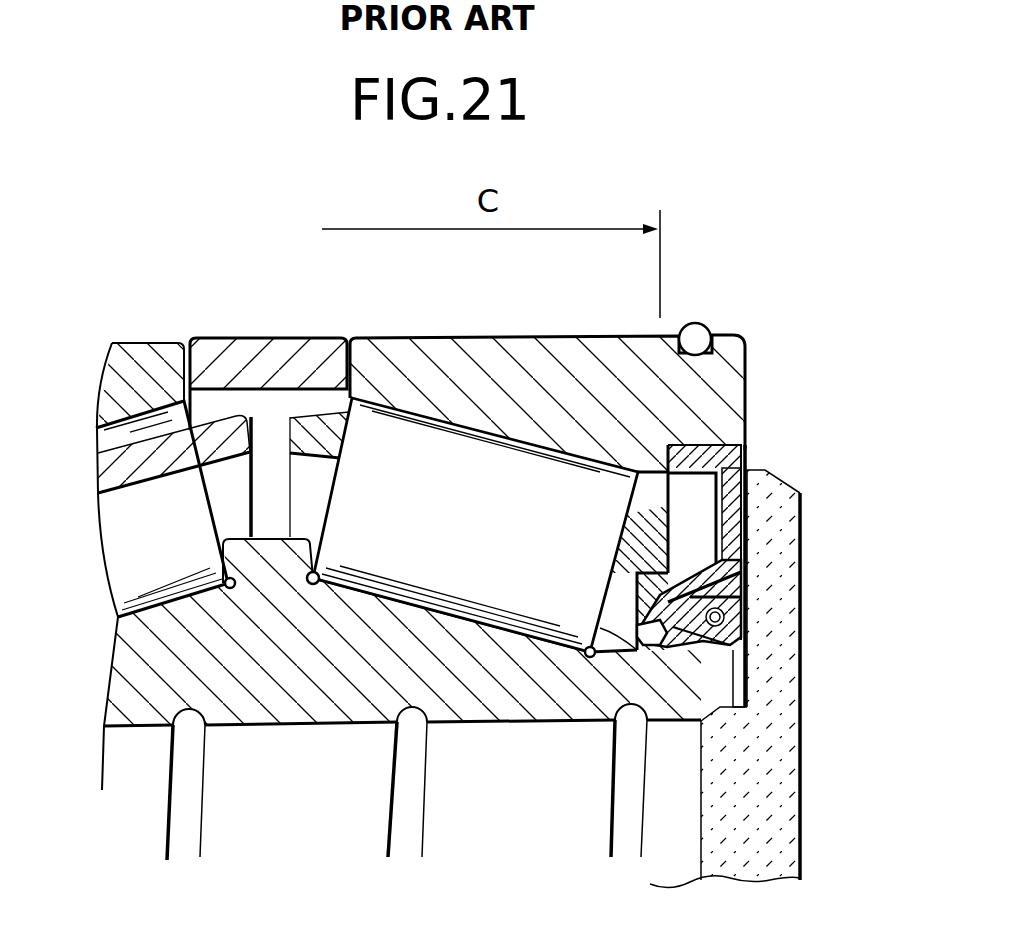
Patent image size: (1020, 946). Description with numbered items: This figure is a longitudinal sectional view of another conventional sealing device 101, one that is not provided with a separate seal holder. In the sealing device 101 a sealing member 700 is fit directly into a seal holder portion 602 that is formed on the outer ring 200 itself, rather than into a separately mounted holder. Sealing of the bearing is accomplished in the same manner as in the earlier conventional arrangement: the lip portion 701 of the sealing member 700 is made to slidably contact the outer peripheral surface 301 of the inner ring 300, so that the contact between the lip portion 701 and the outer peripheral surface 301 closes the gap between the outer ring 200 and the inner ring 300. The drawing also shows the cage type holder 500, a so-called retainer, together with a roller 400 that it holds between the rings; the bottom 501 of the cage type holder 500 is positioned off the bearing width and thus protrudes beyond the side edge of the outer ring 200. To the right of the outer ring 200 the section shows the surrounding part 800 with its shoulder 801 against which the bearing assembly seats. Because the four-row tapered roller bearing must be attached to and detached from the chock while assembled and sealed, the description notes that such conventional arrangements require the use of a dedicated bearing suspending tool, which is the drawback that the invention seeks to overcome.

The sealing device 101 is at (491, 547).
The outer ring 200 is at (487, 360).
The inner ring 300 is at (308, 712).
The outer peripheral surface 301 is at (690, 632).
The tapered roller 400 is at (396, 440).
The cage type holder 500 is at (628, 521).
The bottom 501 is at (637, 563).
The seal holder portion 602 is at (730, 335).
The sealing member 700 is at (748, 520).
The lip portion 701 is at (728, 628).
The bearing suspending tool 800 is at (803, 826).
The housing shoulder 801 is at (793, 714).